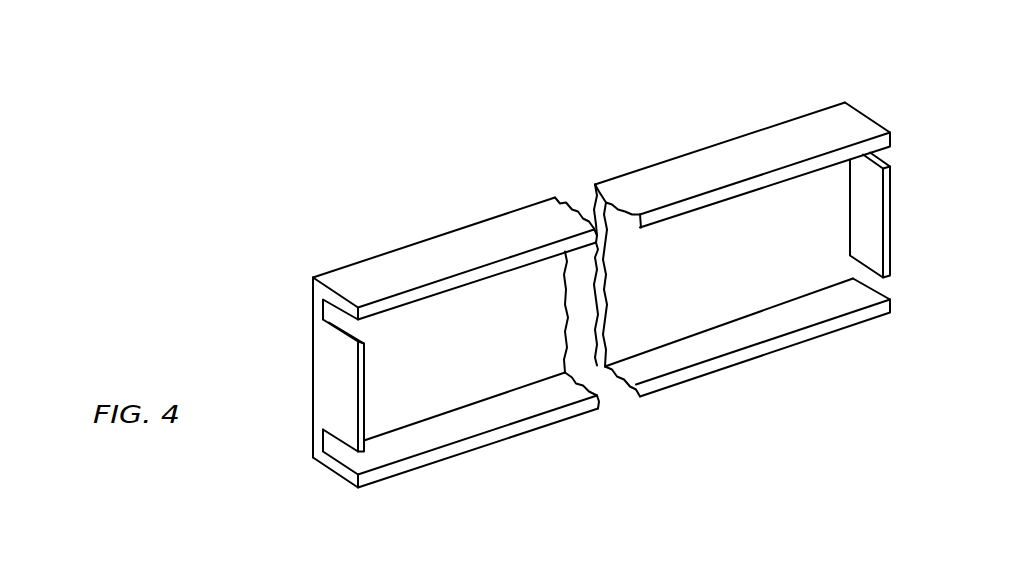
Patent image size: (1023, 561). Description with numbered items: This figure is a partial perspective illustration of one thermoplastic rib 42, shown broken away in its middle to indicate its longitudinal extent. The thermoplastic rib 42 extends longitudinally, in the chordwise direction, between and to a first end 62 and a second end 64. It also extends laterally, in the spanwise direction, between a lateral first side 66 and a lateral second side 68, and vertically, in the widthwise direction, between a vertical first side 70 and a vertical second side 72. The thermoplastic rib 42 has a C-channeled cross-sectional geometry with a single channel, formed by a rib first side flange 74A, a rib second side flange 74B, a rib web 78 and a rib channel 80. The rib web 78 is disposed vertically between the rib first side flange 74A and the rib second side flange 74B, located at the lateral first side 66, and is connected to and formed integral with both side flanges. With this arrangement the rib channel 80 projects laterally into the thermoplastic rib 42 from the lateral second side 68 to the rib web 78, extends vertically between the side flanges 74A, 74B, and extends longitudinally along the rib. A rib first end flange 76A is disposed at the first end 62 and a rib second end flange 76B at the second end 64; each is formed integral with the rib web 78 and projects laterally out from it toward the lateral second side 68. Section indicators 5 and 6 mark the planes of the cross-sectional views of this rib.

The thermoplastic rib 42 is at (615, 284).
The first end 62 is at (312, 318).
The second end 64 is at (857, 270).
The lateral first side 66 is at (311, 440).
The lateral second side 68 is at (425, 468).
The vertical first side 70 is at (367, 268).
The vertical second side 72 is at (332, 477).
The rib first side flange 74A is at (465, 256).
The rib second side flange 74B is at (502, 452).
The rib first end flange 76A is at (338, 370).
The rib second end flange 76B is at (907, 173).
The rib web 78 is at (818, 265).
The rib channel 80 is at (708, 298).
The section line 5- 5 is at (768, 235).
The section line 6- 6 is at (603, 356).